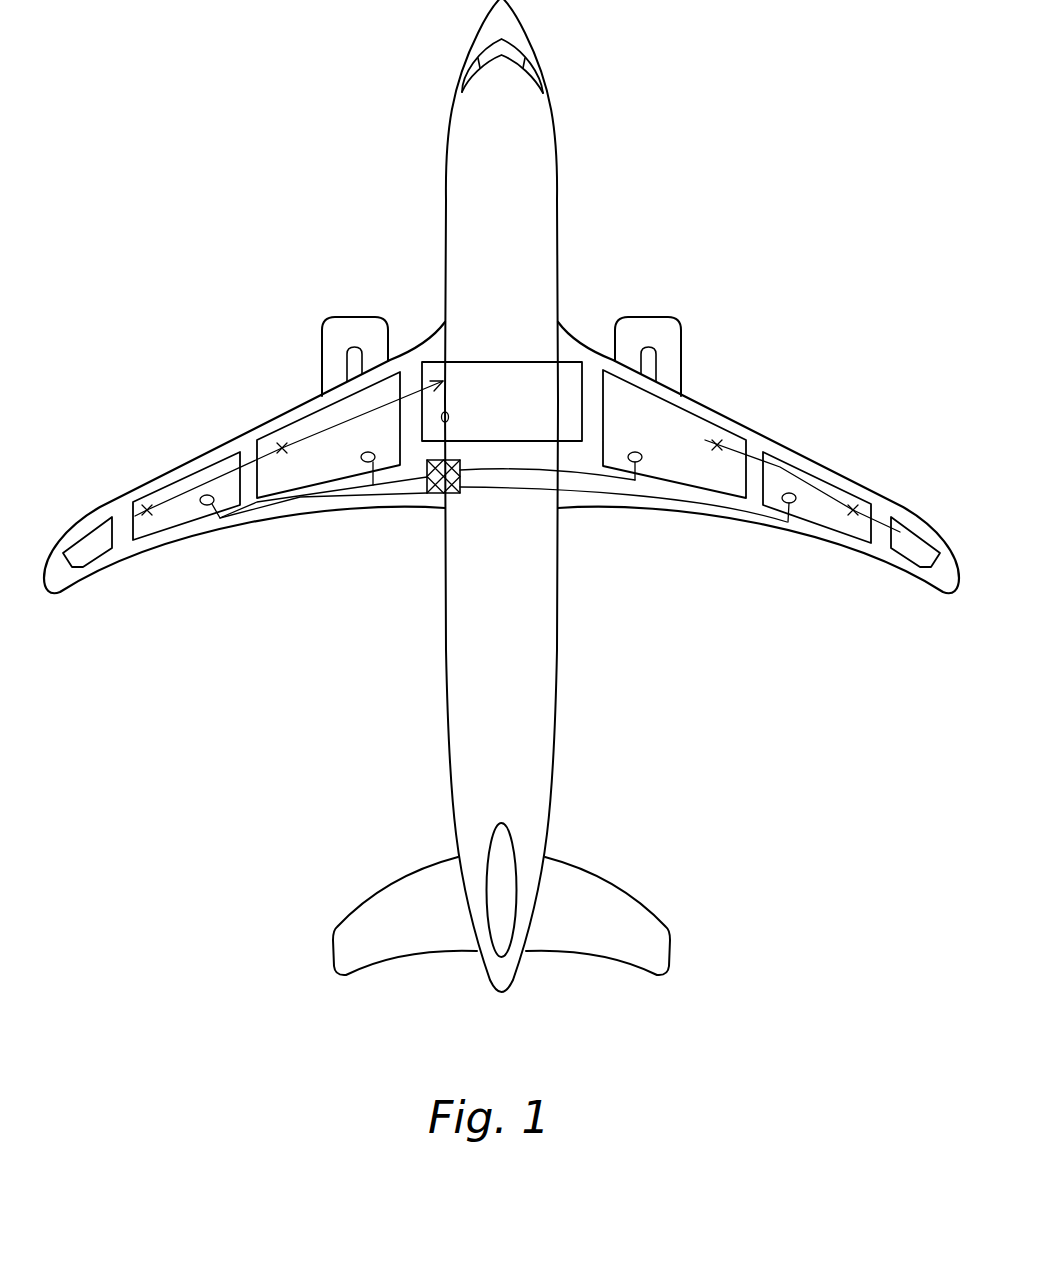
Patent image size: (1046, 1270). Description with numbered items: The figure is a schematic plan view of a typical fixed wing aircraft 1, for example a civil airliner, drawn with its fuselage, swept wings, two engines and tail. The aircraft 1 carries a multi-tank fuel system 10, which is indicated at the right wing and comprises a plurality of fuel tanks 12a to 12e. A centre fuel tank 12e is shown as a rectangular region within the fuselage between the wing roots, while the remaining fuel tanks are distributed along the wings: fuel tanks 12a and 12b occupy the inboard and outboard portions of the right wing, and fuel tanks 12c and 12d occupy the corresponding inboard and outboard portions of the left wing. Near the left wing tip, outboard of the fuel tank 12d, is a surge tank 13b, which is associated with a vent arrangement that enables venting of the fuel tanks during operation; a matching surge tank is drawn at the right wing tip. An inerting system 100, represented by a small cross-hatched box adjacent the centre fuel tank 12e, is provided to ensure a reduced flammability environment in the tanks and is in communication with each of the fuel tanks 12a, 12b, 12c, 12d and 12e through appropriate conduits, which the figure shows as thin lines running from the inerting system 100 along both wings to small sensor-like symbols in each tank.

The aircraft 1 is at (642, 157).
The multi-tank fuel system 10 is at (710, 402).
The fuel tank 12a is at (737, 437).
The fuel tank 12b is at (840, 484).
The fuel tank 12c is at (270, 423).
The fuel tank 12d is at (187, 477).
The centre fuel tank 12e is at (583, 352).
The surge tank 13b is at (87, 556).
The inerting system 100 is at (433, 496).